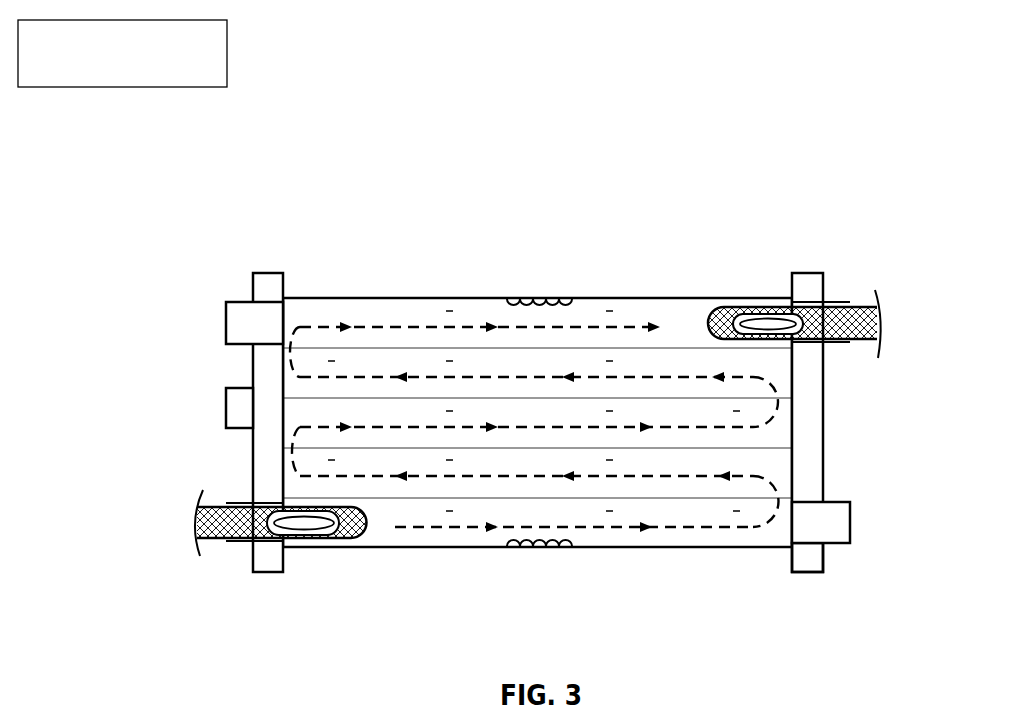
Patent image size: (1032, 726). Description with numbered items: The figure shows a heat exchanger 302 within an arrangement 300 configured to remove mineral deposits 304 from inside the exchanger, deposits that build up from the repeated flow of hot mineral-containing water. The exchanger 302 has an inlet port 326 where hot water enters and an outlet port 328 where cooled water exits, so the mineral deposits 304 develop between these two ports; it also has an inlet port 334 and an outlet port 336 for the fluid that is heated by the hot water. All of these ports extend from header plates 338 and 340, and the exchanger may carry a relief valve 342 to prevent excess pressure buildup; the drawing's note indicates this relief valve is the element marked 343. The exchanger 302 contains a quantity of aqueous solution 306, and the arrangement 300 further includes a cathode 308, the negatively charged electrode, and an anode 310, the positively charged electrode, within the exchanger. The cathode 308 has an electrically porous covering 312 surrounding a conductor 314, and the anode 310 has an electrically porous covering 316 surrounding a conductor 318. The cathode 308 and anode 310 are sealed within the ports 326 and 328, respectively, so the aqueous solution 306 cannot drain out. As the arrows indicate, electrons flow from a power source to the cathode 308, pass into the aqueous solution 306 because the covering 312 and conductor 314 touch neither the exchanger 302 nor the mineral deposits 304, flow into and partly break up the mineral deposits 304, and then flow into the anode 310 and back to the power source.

The arrangement 300 is at (305, 242).
The heat exchanger 302 is at (790, 293).
The mineral deposits 304 is at (512, 299).
The aqueous solution 306 is at (375, 325).
The cathode 308 is at (258, 554).
The anode 310 is at (838, 405).
The electrically porous covering 312 is at (318, 562).
The conductor 314 is at (292, 538).
The electrically porous covering 316 is at (751, 281).
The conductor 318 is at (768, 312).
The inlet port 326 is at (248, 500).
The outlet port 328 is at (848, 294).
The inlet port 334 is at (226, 315).
The outlet port 336 is at (850, 505).
The header plate 338 is at (262, 272).
The header plate 340 is at (812, 572).
The relief valve 342 is at (143, 390).
The connector block 343 is at (226, 404).